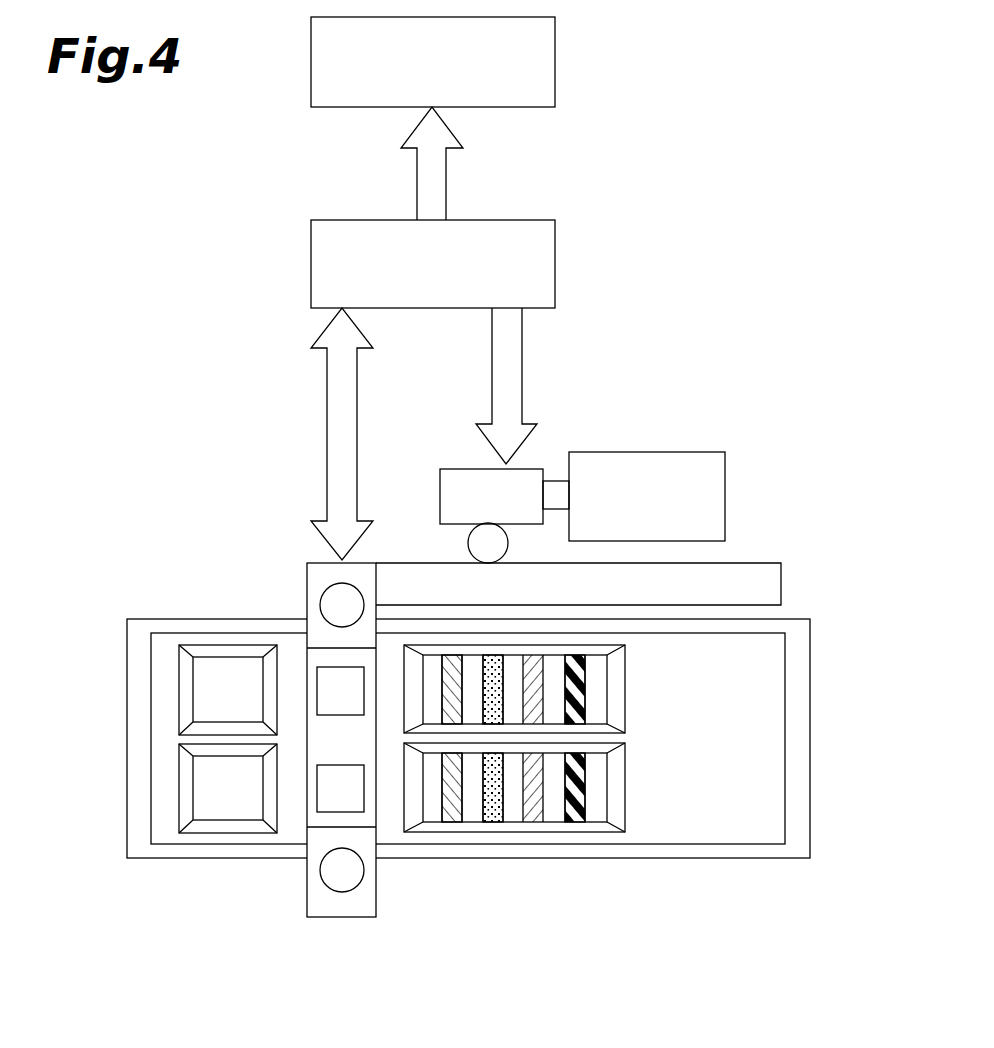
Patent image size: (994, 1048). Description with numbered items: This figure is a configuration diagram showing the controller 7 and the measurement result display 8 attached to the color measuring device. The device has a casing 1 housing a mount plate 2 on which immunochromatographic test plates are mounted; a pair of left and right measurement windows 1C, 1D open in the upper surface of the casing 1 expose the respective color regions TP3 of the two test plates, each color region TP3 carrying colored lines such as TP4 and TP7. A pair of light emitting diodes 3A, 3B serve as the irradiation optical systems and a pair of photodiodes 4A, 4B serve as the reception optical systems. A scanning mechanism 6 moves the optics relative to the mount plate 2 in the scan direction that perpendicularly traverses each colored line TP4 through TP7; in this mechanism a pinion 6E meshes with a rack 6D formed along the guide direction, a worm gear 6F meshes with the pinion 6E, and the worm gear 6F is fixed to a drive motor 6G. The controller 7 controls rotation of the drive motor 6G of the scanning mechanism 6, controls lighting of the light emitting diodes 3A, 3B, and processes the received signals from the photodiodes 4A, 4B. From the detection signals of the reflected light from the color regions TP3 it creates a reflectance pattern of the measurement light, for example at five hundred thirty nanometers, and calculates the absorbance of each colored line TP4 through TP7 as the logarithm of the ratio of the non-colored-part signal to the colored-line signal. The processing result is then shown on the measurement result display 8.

The casing 1 is at (420, 743).
The mount plate 2 is at (127, 688).
The measurement window 1C is at (200, 652).
The measurement window 1D is at (198, 825).
The light emitting diode 3A is at (332, 606).
The light emitting diode 3B is at (336, 882).
The photodiode 4A is at (325, 690).
The photodiode 4B is at (327, 797).
The scanning mechanism 6 is at (548, 447).
The rack 6D is at (750, 563).
The pinion 6E is at (463, 540).
The worm gear 6F is at (472, 468).
The drive motor 6G is at (658, 452).
The controller 7 is at (555, 268).
The measurement result display 8 is at (555, 58).
The color region TP3 is at (515, 820).
The colored line TP4 is at (453, 818).
The colored line TP7 is at (577, 820).